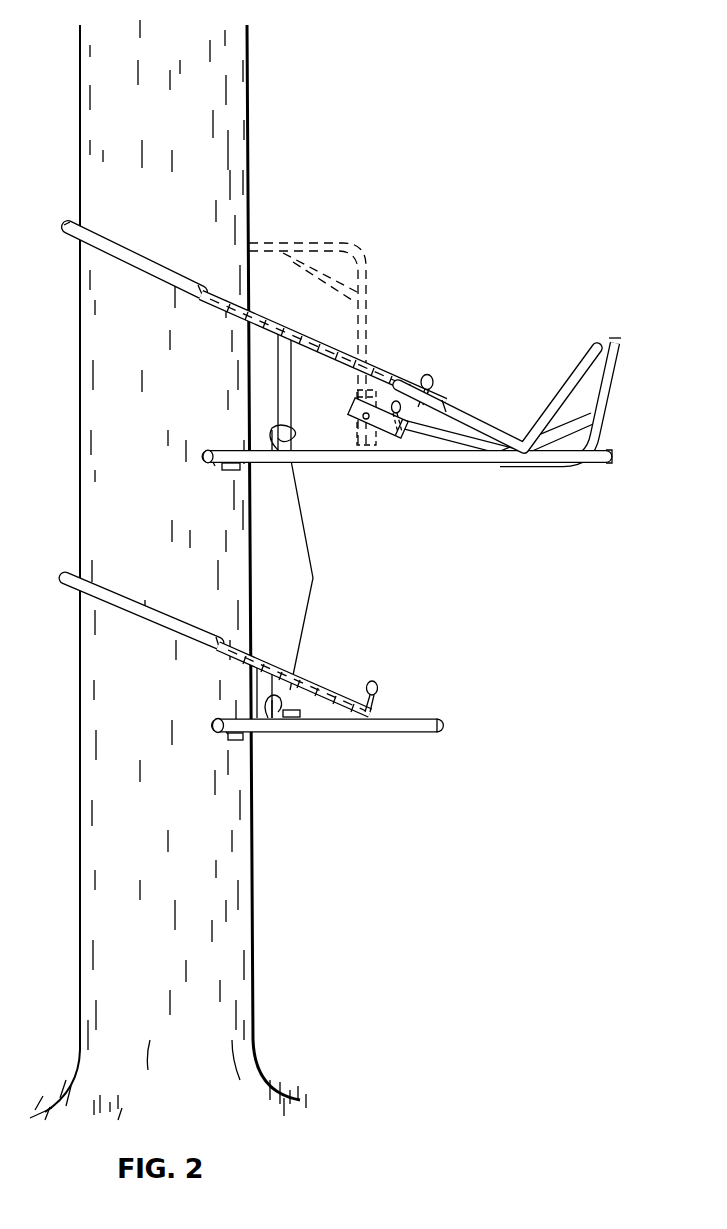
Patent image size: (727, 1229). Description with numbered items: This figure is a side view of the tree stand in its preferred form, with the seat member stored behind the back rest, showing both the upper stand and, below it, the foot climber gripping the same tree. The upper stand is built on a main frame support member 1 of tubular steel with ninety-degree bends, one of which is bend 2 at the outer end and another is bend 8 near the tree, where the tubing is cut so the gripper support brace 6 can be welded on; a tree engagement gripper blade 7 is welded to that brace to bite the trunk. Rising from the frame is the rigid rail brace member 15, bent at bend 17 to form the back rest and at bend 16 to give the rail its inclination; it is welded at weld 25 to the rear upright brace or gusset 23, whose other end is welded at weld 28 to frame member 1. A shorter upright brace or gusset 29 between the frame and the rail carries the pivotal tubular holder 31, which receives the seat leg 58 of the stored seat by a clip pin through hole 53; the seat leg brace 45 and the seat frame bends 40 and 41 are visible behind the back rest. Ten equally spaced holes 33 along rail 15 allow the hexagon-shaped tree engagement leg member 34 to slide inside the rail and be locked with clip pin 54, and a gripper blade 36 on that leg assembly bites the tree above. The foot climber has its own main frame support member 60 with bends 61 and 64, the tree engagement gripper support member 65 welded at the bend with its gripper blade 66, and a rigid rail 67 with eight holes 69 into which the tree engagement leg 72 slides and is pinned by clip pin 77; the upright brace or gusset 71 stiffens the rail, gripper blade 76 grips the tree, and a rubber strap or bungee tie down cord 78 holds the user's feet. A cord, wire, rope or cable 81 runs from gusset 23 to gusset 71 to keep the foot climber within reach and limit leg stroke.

The main frame support member 1 is at (330, 463).
The bend 2 is at (614, 460).
The gripper support brace 6 is at (204, 459).
The tree engagement gripper blade 7 is at (232, 472).
The bend 8 is at (213, 465).
The rigid rail brace member 15 is at (463, 406).
The bend 16 is at (526, 438).
The bend 17 is at (596, 341).
The rear upright brace or gusset 23 is at (286, 430).
The weld 25 is at (282, 340).
The weld 28 is at (292, 458).
The shorter upright brace or gusset 29 is at (370, 447).
The pivotal tubular holder 31 is at (356, 414).
The holes 33 is at (270, 312).
The tree engagement leg member 34 is at (176, 290).
The tree engagement gripper blade 36 is at (83, 224).
The bend 40 is at (575, 470).
The bend 41 is at (617, 338).
The seat leg brace 45 is at (566, 439).
The hole 53 is at (391, 438).
The clip pin 54 is at (434, 375).
The seat leg 58 is at (487, 453).
The main frame support member 60 is at (331, 728).
The bend 61 is at (447, 724).
The bend 64 is at (230, 724).
The tree engagement gripper support member 65 is at (210, 724).
The gripper blade 66 is at (236, 742).
The rigid rail 67 is at (264, 655).
The holes 69 is at (305, 666).
The upright brace or gusset 71 is at (262, 688).
The tree engagement leg 72 is at (152, 622).
The gripper blade 76 is at (74, 578).
The clip pin 77 is at (377, 683).
The rubber strap or bungee tie down cord 78 is at (290, 690).
The cord, wire, rope or cable 81 is at (312, 572).